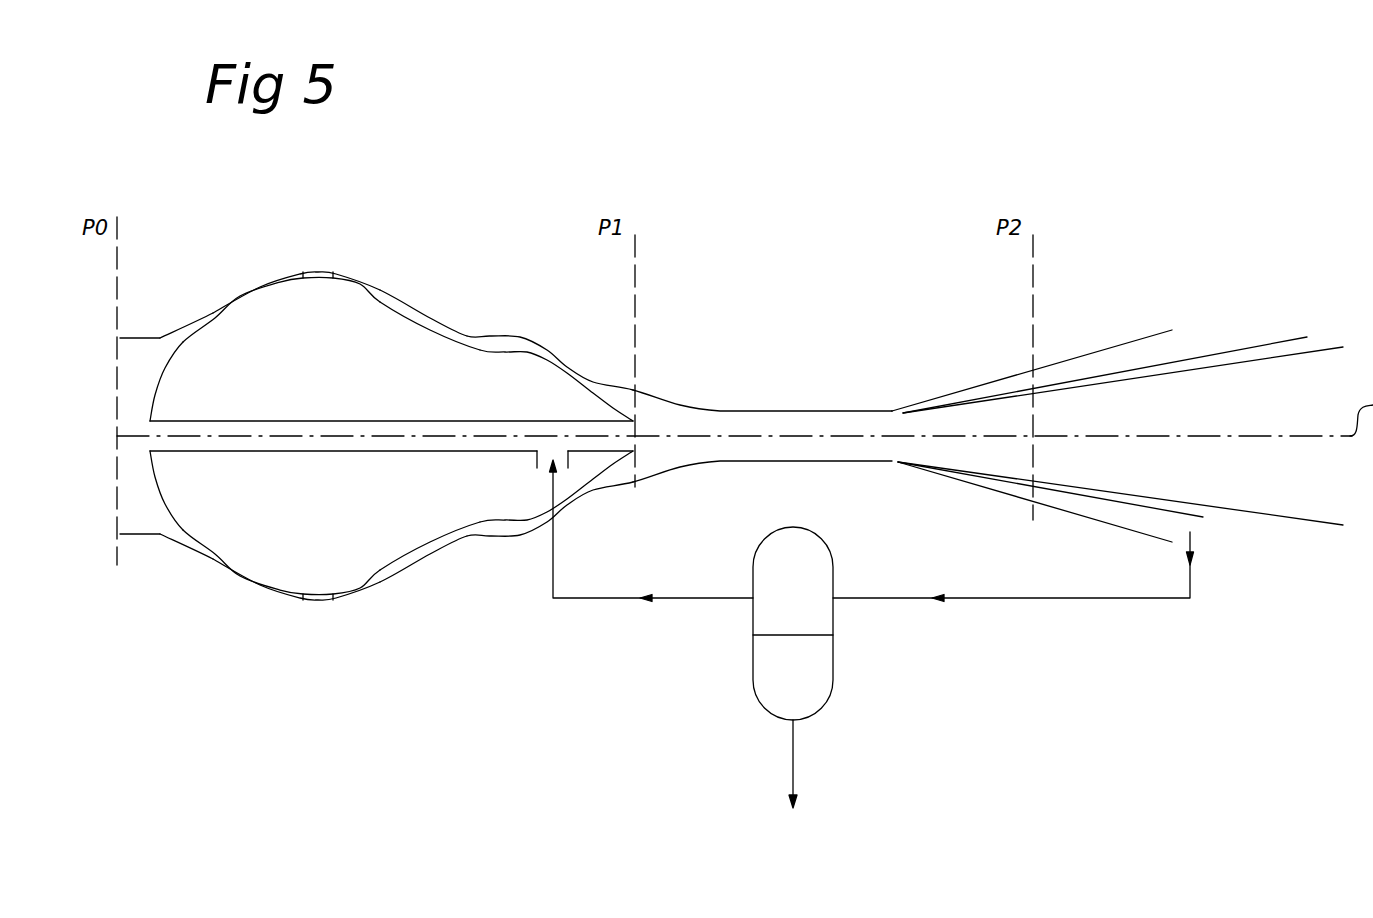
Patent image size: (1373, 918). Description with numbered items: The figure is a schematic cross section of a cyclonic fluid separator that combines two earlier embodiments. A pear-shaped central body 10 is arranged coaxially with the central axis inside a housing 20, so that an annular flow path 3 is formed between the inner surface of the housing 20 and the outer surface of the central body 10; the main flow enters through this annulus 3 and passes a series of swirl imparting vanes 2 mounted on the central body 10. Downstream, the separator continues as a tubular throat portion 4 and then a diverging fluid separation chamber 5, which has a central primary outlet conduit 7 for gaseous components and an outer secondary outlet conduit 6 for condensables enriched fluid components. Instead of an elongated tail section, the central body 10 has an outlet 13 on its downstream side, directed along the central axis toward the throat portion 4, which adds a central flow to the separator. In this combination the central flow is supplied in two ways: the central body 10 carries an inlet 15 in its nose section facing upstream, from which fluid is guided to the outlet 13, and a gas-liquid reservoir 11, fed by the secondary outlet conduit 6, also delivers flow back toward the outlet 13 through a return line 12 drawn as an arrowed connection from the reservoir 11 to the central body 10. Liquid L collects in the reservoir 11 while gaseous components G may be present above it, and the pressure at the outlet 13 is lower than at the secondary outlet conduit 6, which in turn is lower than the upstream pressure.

The swirl imparting vanes 2 is at (319, 272).
The annular flow path 3 is at (420, 316).
The tubular throat portion 4 is at (700, 419).
The diverging fluid separation chamber 5 is at (900, 453).
The secondary outlet conduit 6 is at (1088, 367).
The primary outlet conduit 7 is at (1112, 462).
The central body 10 is at (227, 330).
The gas-liquid reservoir 11 is at (775, 553).
The return line 12 is at (663, 598).
The outlet 13 is at (632, 437).
The inlet 15 is at (167, 427).
The housing 20 is at (520, 340).